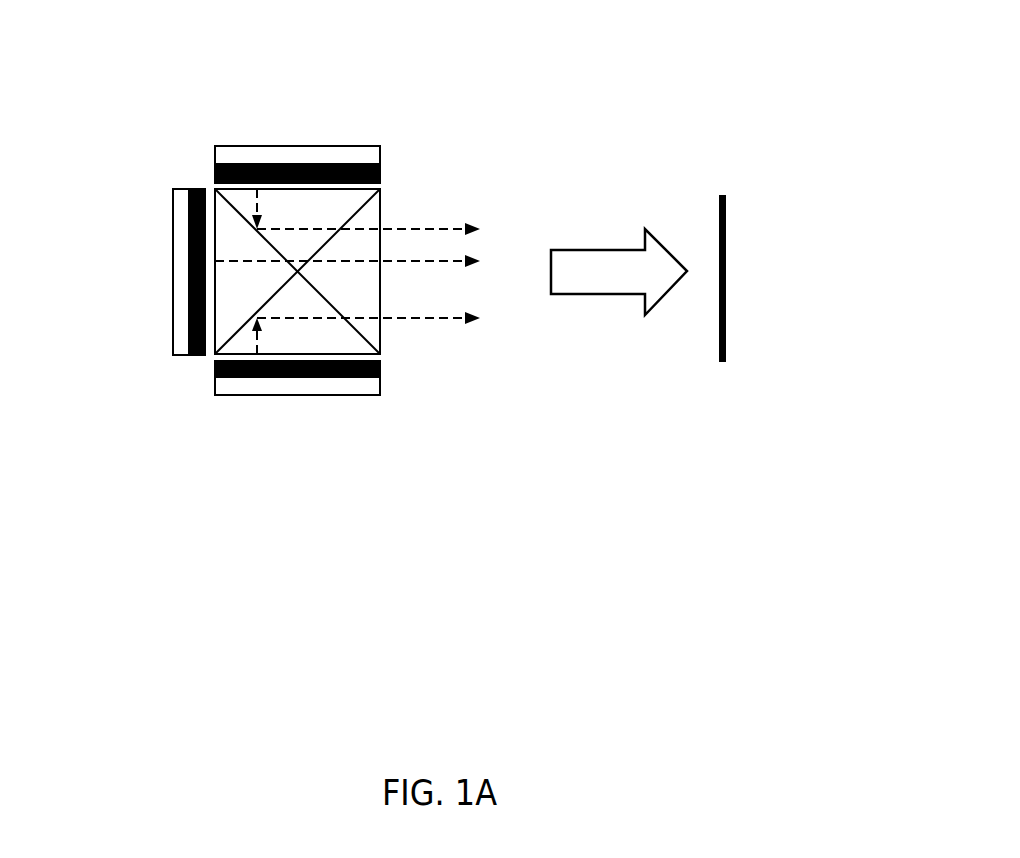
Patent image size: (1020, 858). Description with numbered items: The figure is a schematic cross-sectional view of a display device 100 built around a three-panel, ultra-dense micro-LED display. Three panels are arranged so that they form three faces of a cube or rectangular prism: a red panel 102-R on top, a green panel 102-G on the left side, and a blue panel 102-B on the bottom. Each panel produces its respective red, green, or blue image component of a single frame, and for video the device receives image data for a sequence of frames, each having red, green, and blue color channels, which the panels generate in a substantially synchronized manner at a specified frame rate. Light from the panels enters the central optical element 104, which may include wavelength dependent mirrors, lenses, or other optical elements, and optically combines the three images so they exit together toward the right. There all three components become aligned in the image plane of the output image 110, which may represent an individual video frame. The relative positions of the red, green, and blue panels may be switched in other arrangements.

The display device 100 is at (130, 142).
The red panel 102-R is at (352, 146).
The green panel 102-G is at (172, 218).
The blue panel 102-B is at (343, 395).
The optical element 104 is at (380, 287).
The output image 110 is at (726, 212).